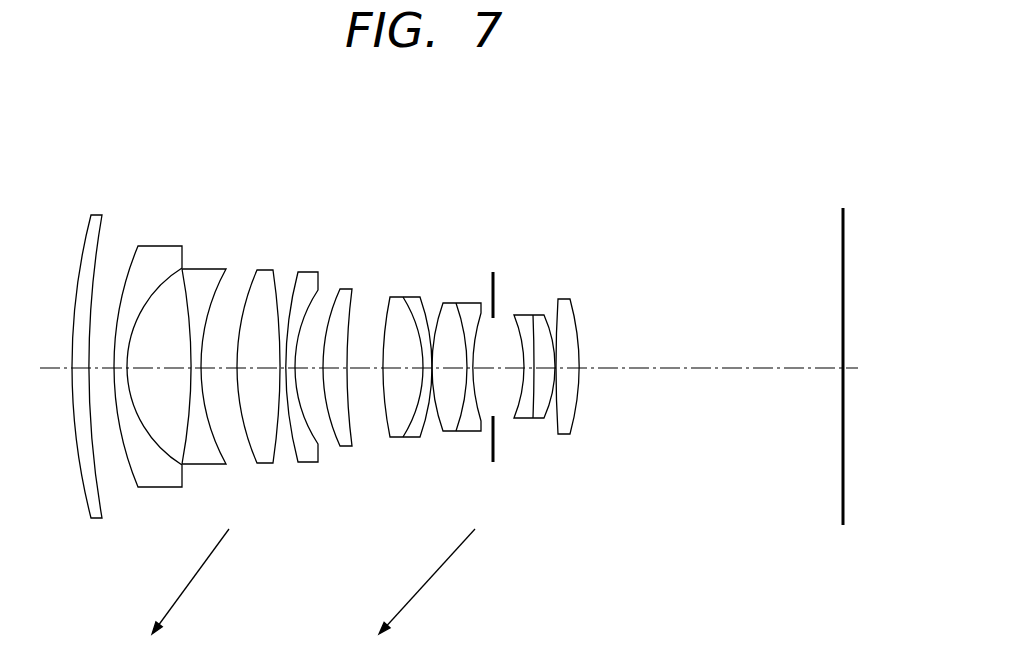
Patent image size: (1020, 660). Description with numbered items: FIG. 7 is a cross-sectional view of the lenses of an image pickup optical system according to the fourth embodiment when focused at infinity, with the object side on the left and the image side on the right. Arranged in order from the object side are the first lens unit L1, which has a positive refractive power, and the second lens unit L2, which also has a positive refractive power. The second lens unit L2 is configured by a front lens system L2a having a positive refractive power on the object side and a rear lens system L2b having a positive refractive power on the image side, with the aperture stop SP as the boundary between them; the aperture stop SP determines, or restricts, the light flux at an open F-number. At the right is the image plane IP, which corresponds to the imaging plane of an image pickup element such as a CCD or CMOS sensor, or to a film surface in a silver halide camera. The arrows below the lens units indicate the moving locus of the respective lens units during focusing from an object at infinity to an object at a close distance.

The first lens unit L1 is at (359, 167).
The second lens unit L2 is at (586, 167).
The 2a-th lens system L2a is at (483, 227).
The 2b-th lens system L2b is at (586, 227).
The aperture stop SP is at (493, 276).
The image plane IP is at (843, 222).